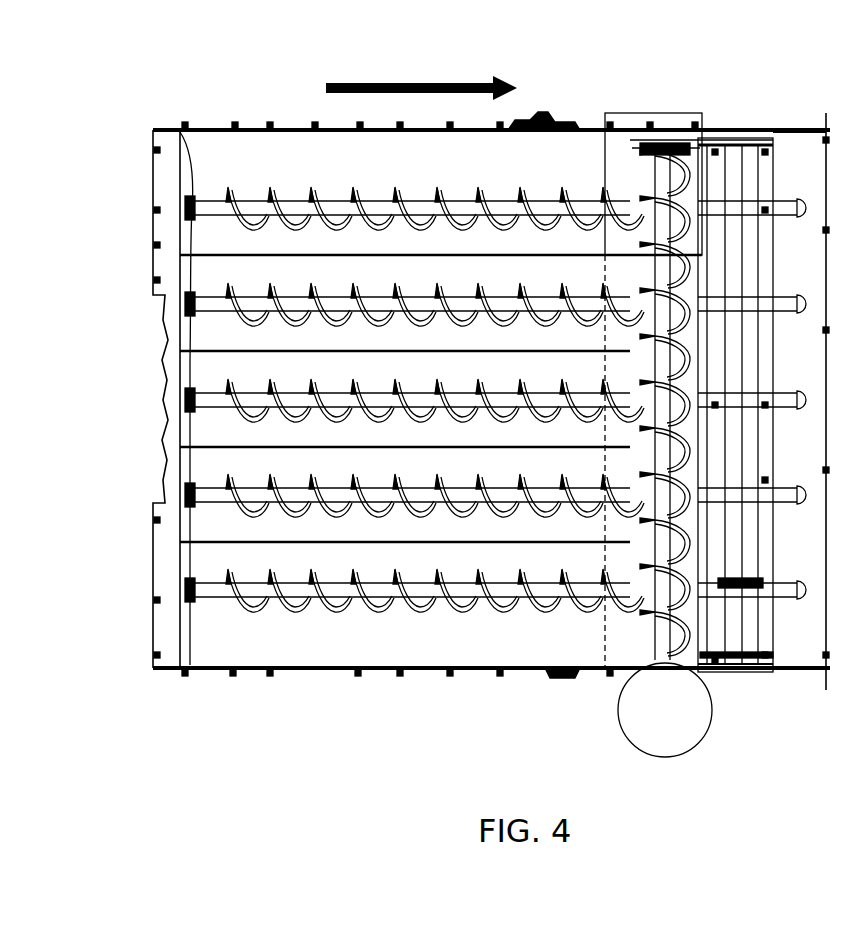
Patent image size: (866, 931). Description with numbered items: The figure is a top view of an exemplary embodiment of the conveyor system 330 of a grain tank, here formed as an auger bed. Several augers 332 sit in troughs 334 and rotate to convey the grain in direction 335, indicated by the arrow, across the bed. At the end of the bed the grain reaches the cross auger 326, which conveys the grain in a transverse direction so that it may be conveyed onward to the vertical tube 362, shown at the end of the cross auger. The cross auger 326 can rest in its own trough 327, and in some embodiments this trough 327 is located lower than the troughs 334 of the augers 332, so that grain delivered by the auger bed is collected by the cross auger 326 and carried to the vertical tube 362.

The cross auger 326 is at (665, 148).
The trough 327 is at (688, 190).
The conveyor system 330 is at (337, 638).
The augers 332 is at (235, 293).
The troughs 334 is at (230, 530).
The direction 335 is at (421, 78).
The vertical tube 362 is at (677, 722).